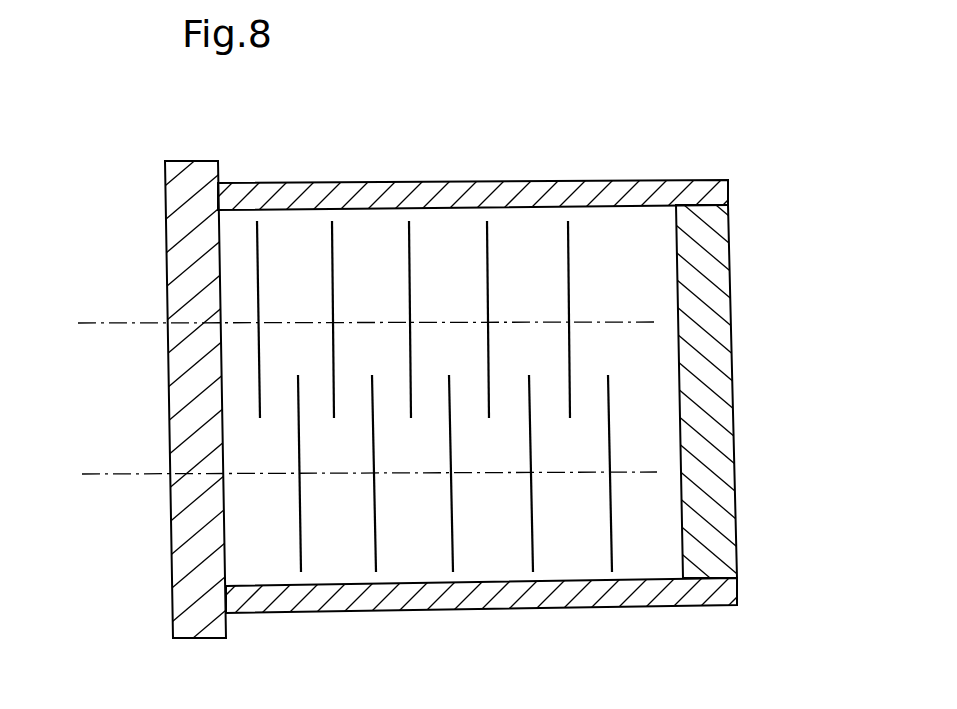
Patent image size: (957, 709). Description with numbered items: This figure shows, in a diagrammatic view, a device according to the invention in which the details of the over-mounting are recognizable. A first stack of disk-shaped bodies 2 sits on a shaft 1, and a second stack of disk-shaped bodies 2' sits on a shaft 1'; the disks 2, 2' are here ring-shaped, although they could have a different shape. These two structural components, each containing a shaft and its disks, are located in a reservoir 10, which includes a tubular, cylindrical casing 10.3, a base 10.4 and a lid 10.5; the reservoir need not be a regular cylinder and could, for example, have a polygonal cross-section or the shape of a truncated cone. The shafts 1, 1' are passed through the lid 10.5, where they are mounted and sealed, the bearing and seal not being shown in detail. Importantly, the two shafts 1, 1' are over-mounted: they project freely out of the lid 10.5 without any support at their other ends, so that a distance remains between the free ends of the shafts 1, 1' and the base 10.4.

The shaft 1 is at (366, 214).
The shaft 1' is at (369, 572).
The disk-shaped bodies 2 is at (413, 272).
The disk-shaped bodies 2' is at (455, 529).
The reservoir 10 is at (770, 366).
The casing 10.3 is at (542, 181).
The base 10.4 is at (722, 297).
The lid 10.5 is at (188, 557).